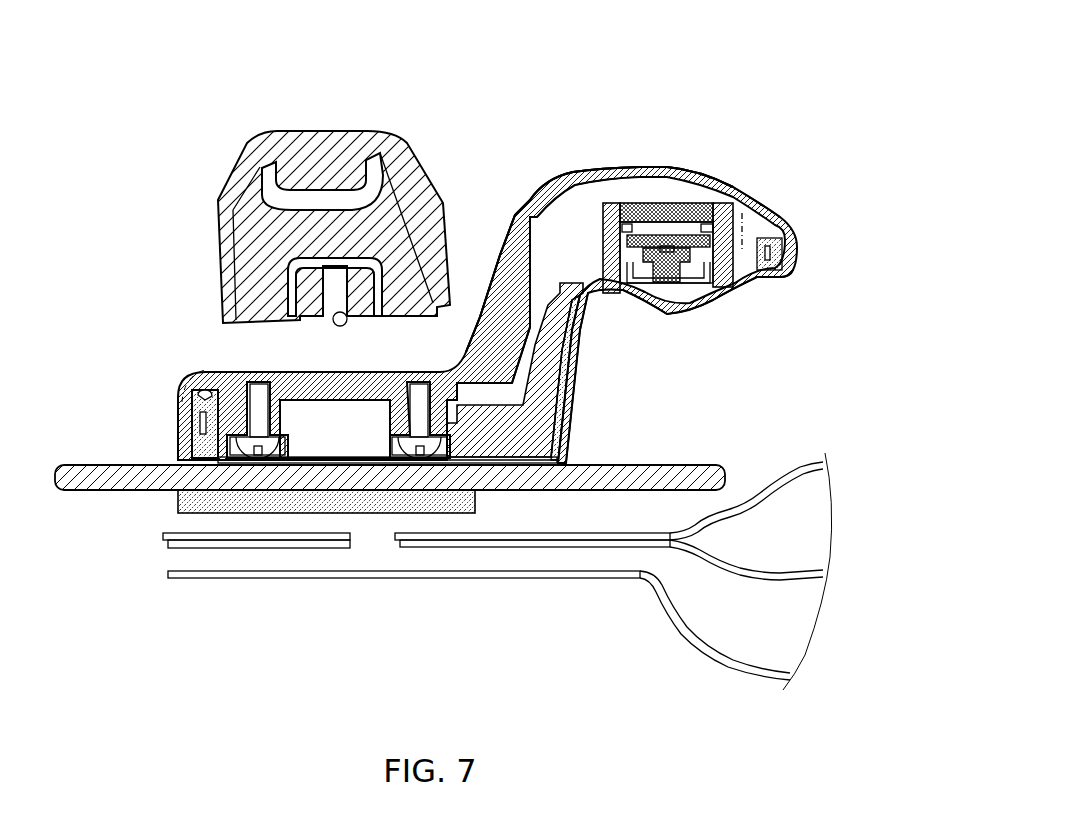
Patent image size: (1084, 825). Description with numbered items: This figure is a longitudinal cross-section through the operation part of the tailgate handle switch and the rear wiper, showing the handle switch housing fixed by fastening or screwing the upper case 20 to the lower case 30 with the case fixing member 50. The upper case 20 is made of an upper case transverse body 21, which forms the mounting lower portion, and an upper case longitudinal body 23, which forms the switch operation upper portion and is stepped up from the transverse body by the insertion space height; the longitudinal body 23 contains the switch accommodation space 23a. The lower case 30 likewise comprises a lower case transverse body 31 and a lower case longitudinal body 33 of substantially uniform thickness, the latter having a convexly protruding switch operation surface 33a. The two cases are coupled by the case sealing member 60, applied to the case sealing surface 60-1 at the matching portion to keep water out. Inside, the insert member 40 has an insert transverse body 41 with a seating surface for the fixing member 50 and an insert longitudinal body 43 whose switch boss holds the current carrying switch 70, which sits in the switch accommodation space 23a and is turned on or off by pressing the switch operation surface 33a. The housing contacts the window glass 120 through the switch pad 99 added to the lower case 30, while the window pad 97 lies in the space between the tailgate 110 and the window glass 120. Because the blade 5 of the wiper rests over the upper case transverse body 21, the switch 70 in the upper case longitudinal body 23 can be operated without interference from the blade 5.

The blade 5 is at (345, 160).
The upper case 20 is at (460, 88).
The upper case transverse body 21 is at (458, 355).
The upper case longitudinal body 23 is at (540, 222).
The switch accommodation space 23a is at (567, 222).
The current carrying switch 70 is at (668, 200).
The case sealing member 60 is at (197, 367).
The case sealing surface 60-1 is at (180, 390).
The lower case 30 is at (813, 293).
The lower case transverse body 31 is at (570, 360).
The lower case longitudinal body 33 is at (740, 285).
The switch operation surface 33a is at (713, 312).
The insert member 40 is at (645, 400).
The insert transverse body 41 is at (560, 440).
The insert longitudinal body 43 is at (565, 380).
The case fixing member 50 is at (262, 442).
The window glass 120 is at (75, 490).
The window pad 97 is at (180, 500).
The switch pad 99 is at (372, 462).
The tailgate 110 is at (193, 578).